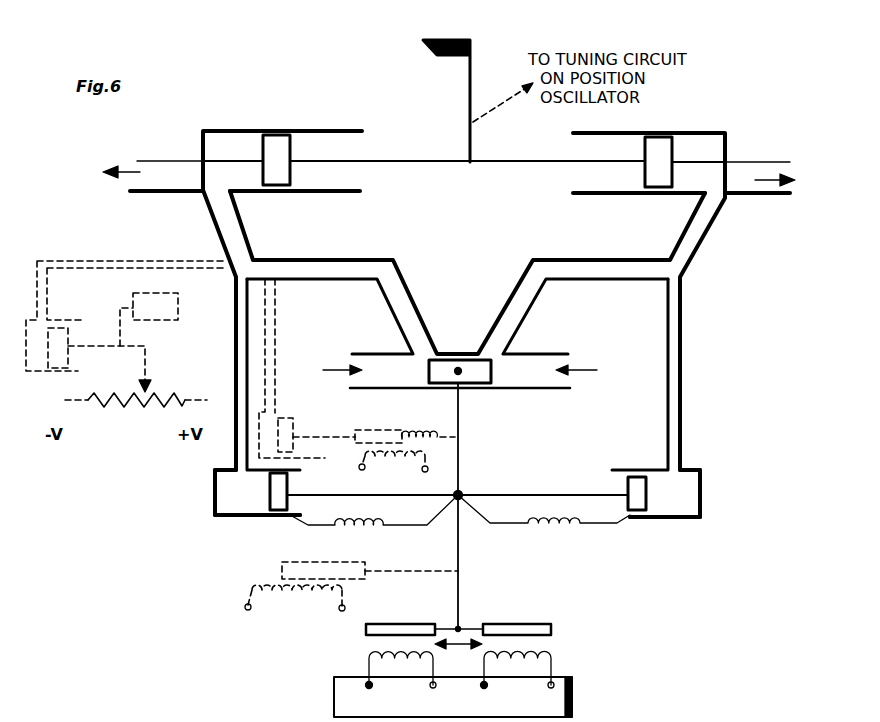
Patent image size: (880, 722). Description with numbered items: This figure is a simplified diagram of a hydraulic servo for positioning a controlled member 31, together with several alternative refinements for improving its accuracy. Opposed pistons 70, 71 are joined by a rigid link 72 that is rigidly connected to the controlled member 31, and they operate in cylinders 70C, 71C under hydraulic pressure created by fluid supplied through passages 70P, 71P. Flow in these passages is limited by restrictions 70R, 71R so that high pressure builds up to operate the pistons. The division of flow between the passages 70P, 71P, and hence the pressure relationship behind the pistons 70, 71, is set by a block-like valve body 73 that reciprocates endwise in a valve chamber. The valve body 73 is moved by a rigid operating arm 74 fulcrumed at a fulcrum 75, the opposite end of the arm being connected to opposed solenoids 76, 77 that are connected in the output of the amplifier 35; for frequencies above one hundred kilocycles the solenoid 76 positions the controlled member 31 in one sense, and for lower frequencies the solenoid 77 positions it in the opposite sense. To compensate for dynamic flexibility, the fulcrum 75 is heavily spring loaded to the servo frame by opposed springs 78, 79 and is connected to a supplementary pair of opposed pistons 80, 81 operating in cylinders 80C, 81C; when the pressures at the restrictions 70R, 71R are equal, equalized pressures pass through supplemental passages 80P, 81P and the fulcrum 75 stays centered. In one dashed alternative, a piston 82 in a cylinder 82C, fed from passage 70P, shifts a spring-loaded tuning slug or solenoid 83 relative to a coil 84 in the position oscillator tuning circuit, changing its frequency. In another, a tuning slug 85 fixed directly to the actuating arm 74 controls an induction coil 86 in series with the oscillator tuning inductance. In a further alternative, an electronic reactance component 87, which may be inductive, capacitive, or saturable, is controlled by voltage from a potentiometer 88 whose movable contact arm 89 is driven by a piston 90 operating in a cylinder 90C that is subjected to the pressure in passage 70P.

The controlled member 31 is at (437, 52).
The amplifier 35 is at (560, 705).
The piston 70 is at (273, 148).
The restriction 70R is at (200, 171).
The cylinder 70C is at (323, 193).
The hydraulic flow passage 70P is at (330, 268).
The piston 71 is at (645, 148).
The restriction 71R is at (729, 173).
The cylinder 71C is at (622, 198).
The hydraulic flow passage 71P is at (587, 278).
The rigid link 72 is at (428, 168).
The valve body 73 is at (492, 372).
The operating arm 74 is at (460, 556).
The fulcrum 75 is at (458, 495).
The solenoid 76 is at (395, 626).
The solenoid 77 is at (540, 623).
The spring 78 is at (360, 524).
The spring 79 is at (560, 527).
The piston 80 is at (290, 490).
The supplemental passage 80P is at (243, 340).
The cylinder 80C is at (235, 517).
The piston 81 is at (628, 487).
The supplemental passage 81P is at (682, 378).
The cylinder 81C is at (675, 519).
The piston 82 is at (287, 425).
The cylinder 82C is at (275, 413).
The solenoid 83 is at (383, 432).
The coil 84 is at (375, 458).
The tuning slug 85 is at (298, 562).
The induction coil 86 is at (250, 587).
The electronic reactance component 87 is at (165, 306).
The potentiometer 88 is at (112, 408).
The movable contact arm 89 is at (147, 365).
The piston 90 is at (57, 335).
The cylinder 90C is at (27, 372).